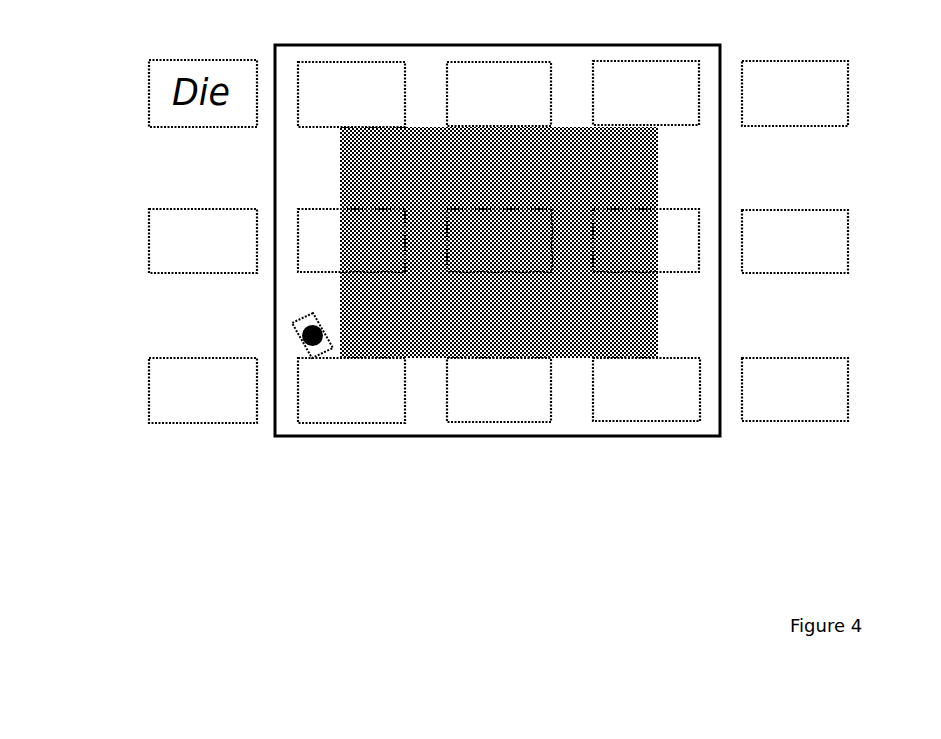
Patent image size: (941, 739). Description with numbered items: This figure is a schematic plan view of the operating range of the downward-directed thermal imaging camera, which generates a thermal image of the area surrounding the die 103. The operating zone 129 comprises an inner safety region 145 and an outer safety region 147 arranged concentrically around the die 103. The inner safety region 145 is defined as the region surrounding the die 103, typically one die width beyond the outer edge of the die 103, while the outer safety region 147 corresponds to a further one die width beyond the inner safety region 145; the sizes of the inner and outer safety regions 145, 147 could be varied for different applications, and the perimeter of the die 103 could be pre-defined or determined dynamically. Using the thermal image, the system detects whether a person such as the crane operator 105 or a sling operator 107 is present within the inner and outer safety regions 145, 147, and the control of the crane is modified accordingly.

The die 103 is at (325, 333).
The crane operator 105 is at (304, 337).
The sling operator 107 is at (207, 335).
The operating zone 129 is at (716, 446).
The inner safety region 145 is at (607, 338).
The outer safety region 147 is at (288, 425).